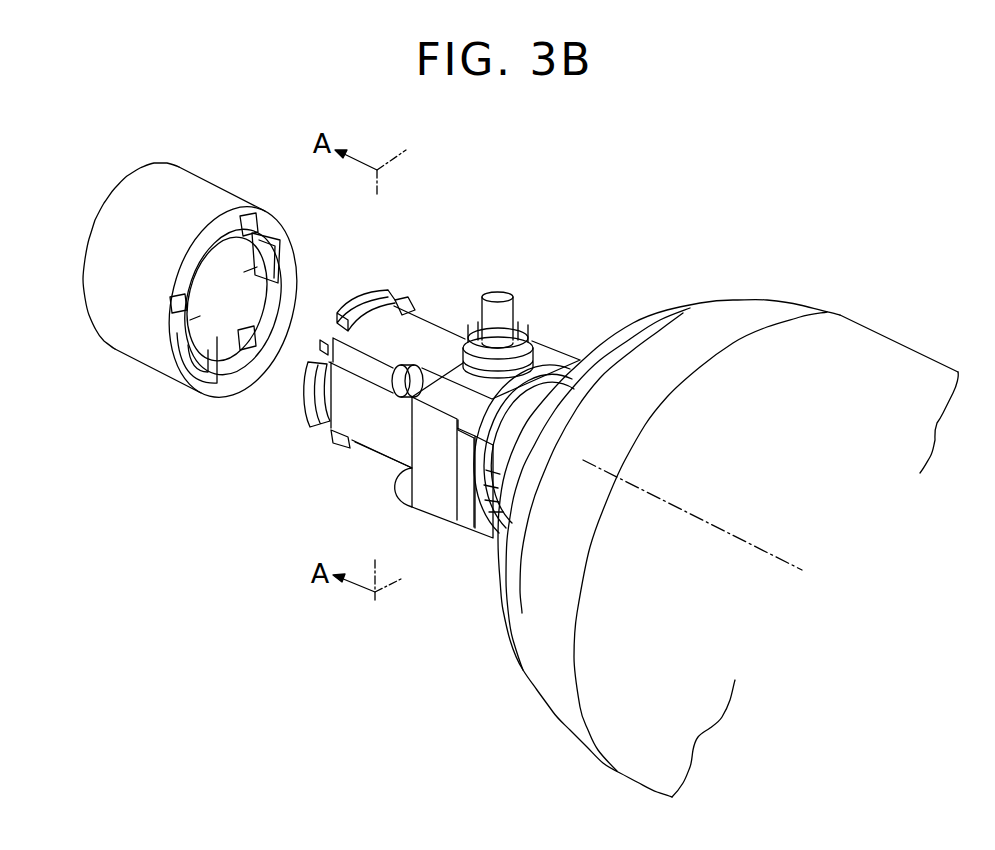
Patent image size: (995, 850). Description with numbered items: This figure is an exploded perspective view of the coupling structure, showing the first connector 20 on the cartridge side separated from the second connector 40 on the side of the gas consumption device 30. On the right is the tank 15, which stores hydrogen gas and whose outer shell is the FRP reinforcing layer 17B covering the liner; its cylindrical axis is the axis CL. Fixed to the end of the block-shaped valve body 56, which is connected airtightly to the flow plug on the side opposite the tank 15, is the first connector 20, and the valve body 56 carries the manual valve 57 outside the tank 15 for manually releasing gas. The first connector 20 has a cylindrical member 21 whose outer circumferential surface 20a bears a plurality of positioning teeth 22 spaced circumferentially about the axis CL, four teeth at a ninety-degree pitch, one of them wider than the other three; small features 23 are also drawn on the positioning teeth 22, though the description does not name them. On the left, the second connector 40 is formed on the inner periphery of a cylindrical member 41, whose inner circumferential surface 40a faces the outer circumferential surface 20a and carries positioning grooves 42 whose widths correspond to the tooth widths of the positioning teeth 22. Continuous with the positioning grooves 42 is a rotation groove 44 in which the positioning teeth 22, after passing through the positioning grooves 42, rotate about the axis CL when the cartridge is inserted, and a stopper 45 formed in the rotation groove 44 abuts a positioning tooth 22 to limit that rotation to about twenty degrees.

The gas consumption device 30 is at (74, 221).
The cylindrical member 41 is at (215, 186).
The second connector 40 is at (168, 408).
The inner circumferential surface 40a is at (247, 333).
The positioning grooves 42 is at (254, 220).
The rotation groove 44 is at (258, 236).
The stopper 45 is at (249, 276).
The first connector 20 is at (295, 405).
The cylindrical member 21 is at (422, 332).
The outer circumferential surface 20a is at (367, 425).
The positioning teeth 22 is at (350, 292).
The tab 23 is at (320, 347).
The valve body 56 is at (431, 495).
The manual valve 57 is at (497, 305).
The tank 15 is at (766, 282).
The reinforcing layer 17B is at (868, 348).
The axis CL is at (714, 531).